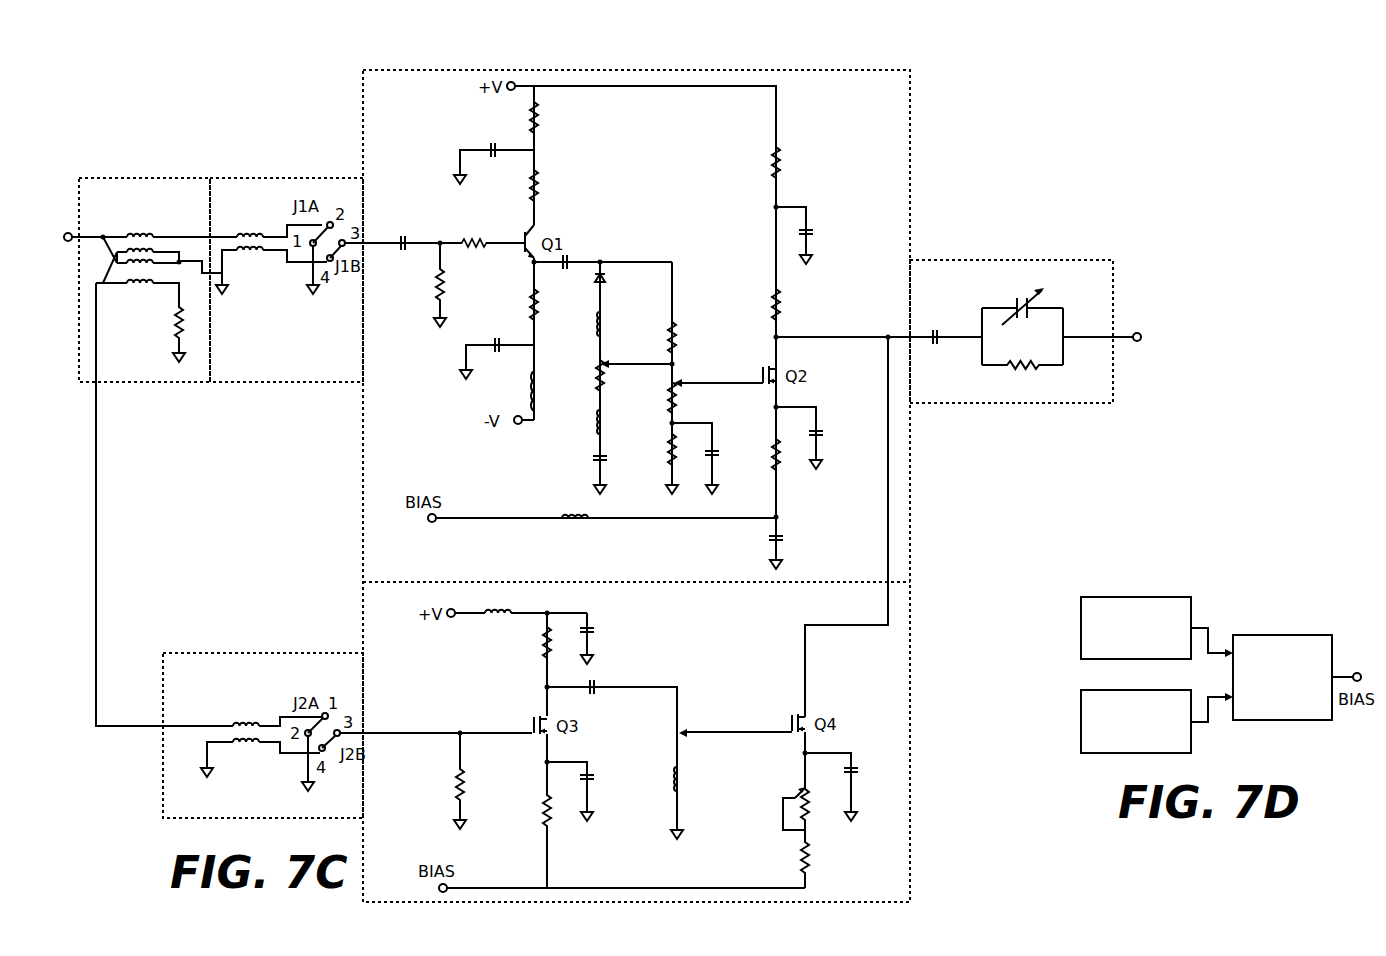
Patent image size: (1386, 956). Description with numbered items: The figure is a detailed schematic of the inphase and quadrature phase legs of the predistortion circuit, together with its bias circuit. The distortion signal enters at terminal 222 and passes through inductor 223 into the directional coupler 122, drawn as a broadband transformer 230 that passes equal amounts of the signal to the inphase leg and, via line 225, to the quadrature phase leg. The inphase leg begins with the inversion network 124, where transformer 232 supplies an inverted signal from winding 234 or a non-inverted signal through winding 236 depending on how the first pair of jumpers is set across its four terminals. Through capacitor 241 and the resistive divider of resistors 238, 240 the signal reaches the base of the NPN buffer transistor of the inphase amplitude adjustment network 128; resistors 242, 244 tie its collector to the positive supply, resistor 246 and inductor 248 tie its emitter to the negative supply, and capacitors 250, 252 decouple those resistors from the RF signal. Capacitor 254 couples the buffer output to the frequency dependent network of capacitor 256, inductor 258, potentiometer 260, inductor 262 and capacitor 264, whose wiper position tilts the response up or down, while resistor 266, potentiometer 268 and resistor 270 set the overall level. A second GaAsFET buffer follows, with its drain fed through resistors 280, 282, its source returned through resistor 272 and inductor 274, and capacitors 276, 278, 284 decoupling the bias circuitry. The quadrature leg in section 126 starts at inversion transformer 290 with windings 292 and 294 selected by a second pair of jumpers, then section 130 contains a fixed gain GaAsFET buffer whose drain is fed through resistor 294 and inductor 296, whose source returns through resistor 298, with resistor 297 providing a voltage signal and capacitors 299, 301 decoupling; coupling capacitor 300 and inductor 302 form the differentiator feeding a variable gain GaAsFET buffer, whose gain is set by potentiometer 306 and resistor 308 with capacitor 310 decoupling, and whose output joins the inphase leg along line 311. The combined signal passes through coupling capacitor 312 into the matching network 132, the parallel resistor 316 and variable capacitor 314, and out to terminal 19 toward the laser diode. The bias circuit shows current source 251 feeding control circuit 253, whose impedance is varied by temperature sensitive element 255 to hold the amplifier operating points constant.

In FIG. 7C, the output terminal 19 is at (1135, 340).
In FIG. 7C, the directional coupler 122 is at (159, 178).
In FIG. 7C, the inversion network 124 is at (282, 178).
In FIG. 7C, the second input section 126 is at (280, 653).
In FIG. 7C, the inphase amplitude adjustment network 128 is at (910, 206).
In FIG. 7C, the second amplifier section 130 is at (910, 690).
In FIG. 7C, the matching network 132 is at (1113, 310).
In FIG. 7C, the input terminal 222 is at (68, 233).
In FIG. 7C, the inductor 223 is at (193, 237).
In FIG. 7C, the connection line 225 is at (100, 488).
In FIG. 7C, the broadband transformer 230 is at (138, 290).
In FIG. 7C, the transformer 232 is at (247, 264).
In FIG. 7C, the winding 234 is at (263, 252).
In FIG. 7C, the winding 236 is at (265, 237).
In FIG. 7C, the resistor 238 is at (446, 286).
In FIG. 7C, the resistor 240 is at (478, 238).
In FIG. 7C, the capacitor 241 is at (403, 230).
In FIG. 7C, the resistor 242 is at (540, 108).
In FIG. 7C, the resistor 244 is at (540, 194).
In FIG. 7C, the resistor 246 is at (538, 305).
In FIG. 7C, the inductor 248 is at (540, 375).
In FIG. 7C, the capacitor 250 is at (490, 148).
In FIG. 7D, the current source 251 is at (1081, 720).
In FIG. 7C, the capacitor 252 is at (497, 350).
In FIG. 7D, the control circuit 253 is at (1262, 635).
In FIG. 7C, the capacitor 254 is at (570, 260).
In FIG. 7D, the temperature sensitive element 255 is at (1118, 597).
In FIG. 7C, the capacitor 256 is at (608, 277).
In FIG. 7C, the inductor 258 is at (605, 315).
In FIG. 7C, the potentiometer 260 is at (606, 375).
In FIG. 7C, the inductor 262 is at (604, 421).
In FIG. 7C, the capacitor 264 is at (595, 457).
In FIG. 7C, the resistor 266 is at (676, 335).
In FIG. 7C, the potentiometer 268 is at (677, 390).
In FIG. 7C, the resistor 270 is at (675, 462).
In FIG. 7C, the resistor 272 is at (774, 456).
In FIG. 7C, the inductor 274 is at (573, 521).
In FIG. 7C, the capacitor 276 is at (780, 535).
In FIG. 7C, the capacitor 278 is at (813, 230).
In FIG. 7C, the resistor 280 is at (788, 155).
In FIG. 7C, the resistor 282 is at (785, 295).
In FIG. 7C, the capacitor 284 is at (818, 437).
In FIG. 7C, the inversion transformer 290 is at (247, 722).
In FIG. 7C, the winding 292 is at (248, 745).
In FIG. 7C, the winding / resistor 294 is at (233, 726).
In FIG. 7C, the inductor 296 is at (490, 620).
In FIG. 7C, the resistor 297 is at (468, 780).
In FIG. 7C, the resistor 298 is at (552, 820).
In FIG. 7C, the capacitor 299 is at (593, 631).
In FIG. 7C, the coupling capacitor 300 is at (596, 685).
In FIG. 7C, the capacitor 301 is at (593, 775).
In FIG. 7C, the inductor 302 is at (681, 780).
In FIG. 7C, the potentiometer 306 is at (797, 795).
In FIG. 7C, the resistor 308 is at (802, 854).
In FIG. 7C, the capacitor 310 is at (857, 770).
In FIG. 7C, the feedback line 311 is at (888, 337).
In FIG. 7C, the coupling capacitor 312 is at (936, 330).
In FIG. 7C, the variable capacitor 314 is at (1028, 290).
In FIG. 7C, the resistor 316 is at (1005, 370).